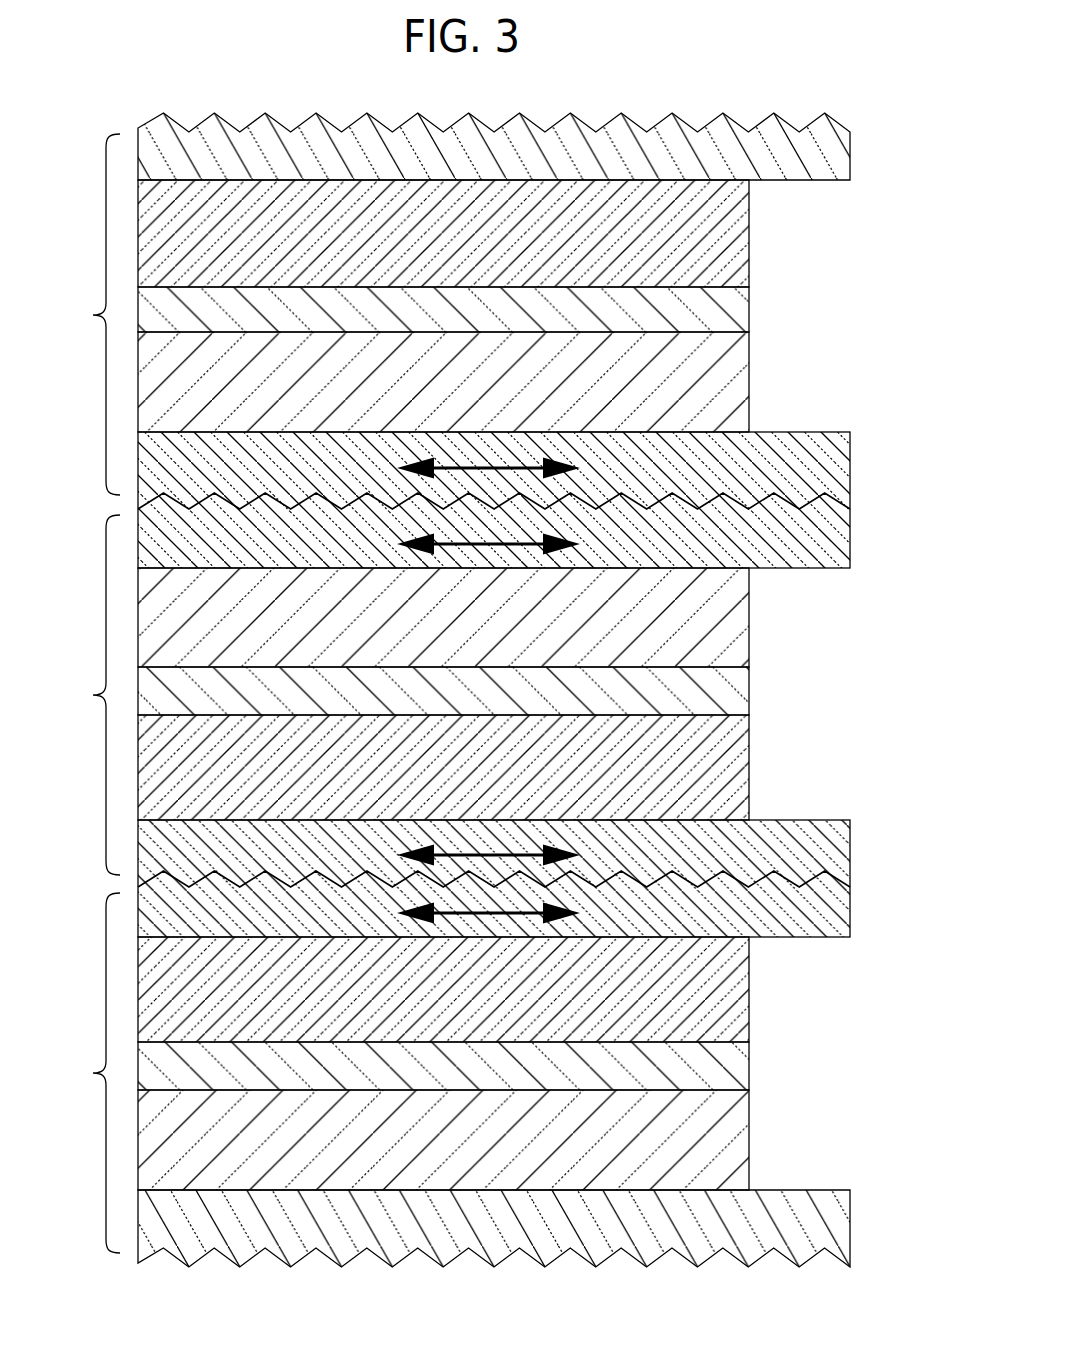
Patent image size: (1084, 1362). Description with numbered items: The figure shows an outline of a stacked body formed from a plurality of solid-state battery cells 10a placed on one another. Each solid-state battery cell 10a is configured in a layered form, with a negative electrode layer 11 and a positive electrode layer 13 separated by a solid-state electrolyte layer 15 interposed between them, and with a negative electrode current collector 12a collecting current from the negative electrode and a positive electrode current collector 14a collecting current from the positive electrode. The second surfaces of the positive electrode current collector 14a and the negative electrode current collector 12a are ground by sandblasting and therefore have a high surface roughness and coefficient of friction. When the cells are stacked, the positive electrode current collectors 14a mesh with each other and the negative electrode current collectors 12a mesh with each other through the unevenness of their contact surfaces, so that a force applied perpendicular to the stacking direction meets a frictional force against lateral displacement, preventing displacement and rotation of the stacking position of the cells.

The solid-state battery cell 10a is at (82, 693).
The negative electrode layer 11 is at (728, 385).
The negative electrode current collector 12a is at (832, 467).
The positive electrode layer 13 is at (728, 238).
The positive electrode current collector 14a is at (832, 153).
The solid-state electrolyte layer 15 is at (728, 311).